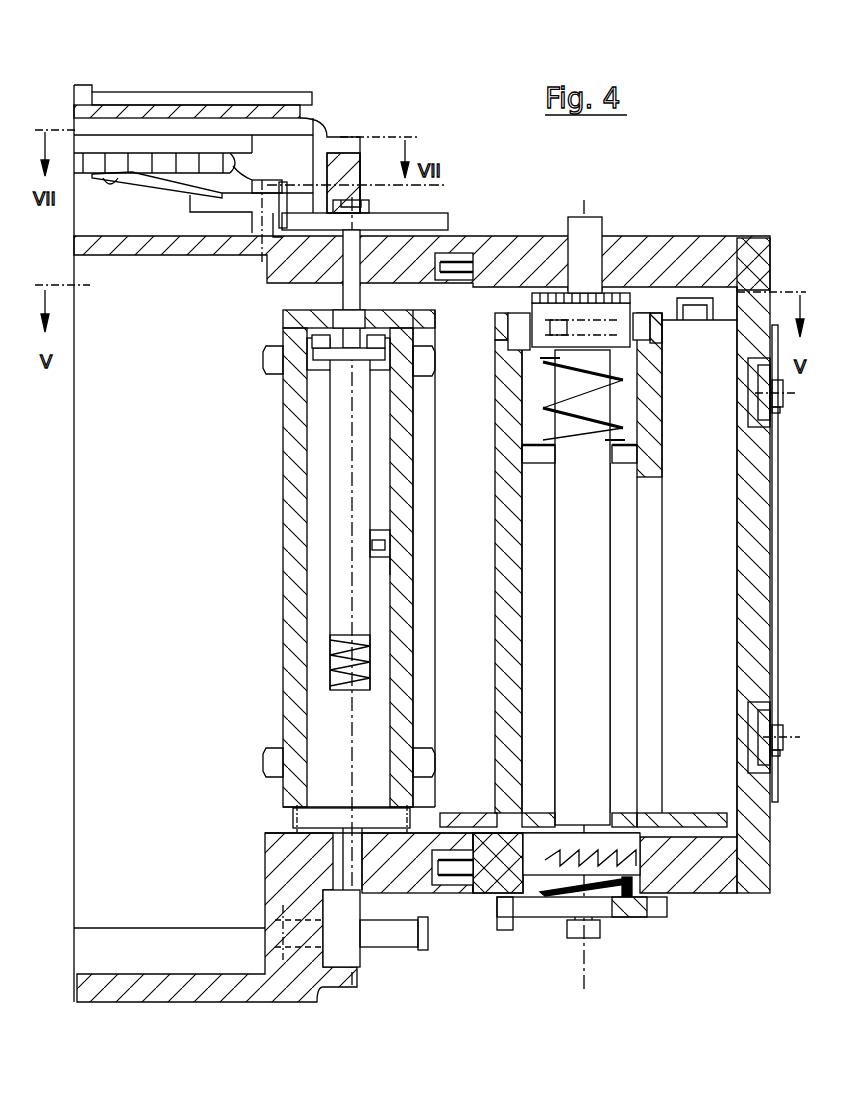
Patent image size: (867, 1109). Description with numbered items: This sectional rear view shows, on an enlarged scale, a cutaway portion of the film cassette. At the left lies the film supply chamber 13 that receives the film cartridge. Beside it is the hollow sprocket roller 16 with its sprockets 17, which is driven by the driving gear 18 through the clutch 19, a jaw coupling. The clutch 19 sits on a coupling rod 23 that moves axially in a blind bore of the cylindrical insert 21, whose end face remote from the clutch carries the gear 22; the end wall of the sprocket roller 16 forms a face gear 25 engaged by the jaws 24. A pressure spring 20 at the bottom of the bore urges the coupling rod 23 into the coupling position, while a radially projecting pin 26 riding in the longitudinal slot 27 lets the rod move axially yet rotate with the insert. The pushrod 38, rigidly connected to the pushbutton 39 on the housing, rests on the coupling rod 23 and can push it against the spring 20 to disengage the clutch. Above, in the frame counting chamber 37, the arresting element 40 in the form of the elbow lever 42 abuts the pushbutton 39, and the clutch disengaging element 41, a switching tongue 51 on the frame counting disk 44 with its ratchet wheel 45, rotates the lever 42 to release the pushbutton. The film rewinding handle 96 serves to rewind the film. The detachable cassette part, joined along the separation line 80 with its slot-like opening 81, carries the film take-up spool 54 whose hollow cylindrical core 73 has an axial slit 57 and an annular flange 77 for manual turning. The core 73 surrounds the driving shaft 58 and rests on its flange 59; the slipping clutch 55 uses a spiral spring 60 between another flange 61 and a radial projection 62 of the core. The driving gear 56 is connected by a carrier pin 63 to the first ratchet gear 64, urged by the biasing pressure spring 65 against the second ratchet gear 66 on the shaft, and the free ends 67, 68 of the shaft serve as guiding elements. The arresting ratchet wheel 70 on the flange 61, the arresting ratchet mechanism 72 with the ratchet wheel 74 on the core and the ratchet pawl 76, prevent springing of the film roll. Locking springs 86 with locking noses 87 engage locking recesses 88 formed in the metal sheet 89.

The film supply chamber 13 is at (158, 571).
The sprocket roller 16 is at (297, 432).
The sprockets 17 is at (270, 762).
The driving gear 18 is at (392, 933).
The clutch 19 is at (296, 332).
The pressure spring 20 is at (340, 657).
The cylindrical insert 21 is at (318, 470).
The gear 22 is at (293, 818).
The coupling rod 23 is at (340, 400).
The jaws 24 is at (378, 320).
The face gear 25 is at (323, 317).
The radially projecting pin 26 is at (385, 560).
The longitudinal slot 27 is at (380, 543).
The frame counting chamber 37 is at (277, 177).
The pushrod 38 is at (335, 260).
The pushbutton 39 is at (435, 222).
The arresting element 40 is at (233, 166).
The clutch disengaging element 41 is at (170, 182).
The elbow lever 42 is at (297, 200).
The frame counting disk 44 is at (140, 147).
The ratchet wheel 45 is at (271, 178).
The switching tongue 51 is at (183, 186).
The film take-up spool 54 is at (672, 372).
The slipping clutch 55 is at (622, 408).
The driving gear 56 is at (537, 908).
The axial slit 57 is at (650, 527).
The driving shaft 58 is at (597, 633).
The flange 59 is at (637, 856).
The spiral spring 60 is at (553, 430).
The flange 61 is at (540, 325).
The radial projection 62 is at (625, 460).
The carrier pin 63 is at (626, 912).
The first ratchet gear 64 is at (533, 862).
The biasing pressure spring 65 is at (578, 890).
The second ratchet gear 66 is at (630, 845).
The free end of driving shaft 67 is at (595, 230).
The free end of driving shaft 68 is at (592, 935).
The arresting ratchet wheel 70 is at (613, 298).
The arresting ratchet mechanism 72 is at (666, 305).
The hollow cylindrical core 73 is at (508, 410).
The ratchet wheel 74 is at (497, 325).
The ratchet pawl 76 is at (693, 310).
The annular flange 77 is at (683, 820).
The separation line 80 is at (450, 890).
The slot-like opening 81 is at (428, 312).
The locking springs 86 is at (760, 385).
The locking nose 87 is at (786, 396).
The locking recesses 88 is at (774, 413).
The metal sheet 89 is at (778, 605).
The film rewinding handle 96 is at (253, 97).